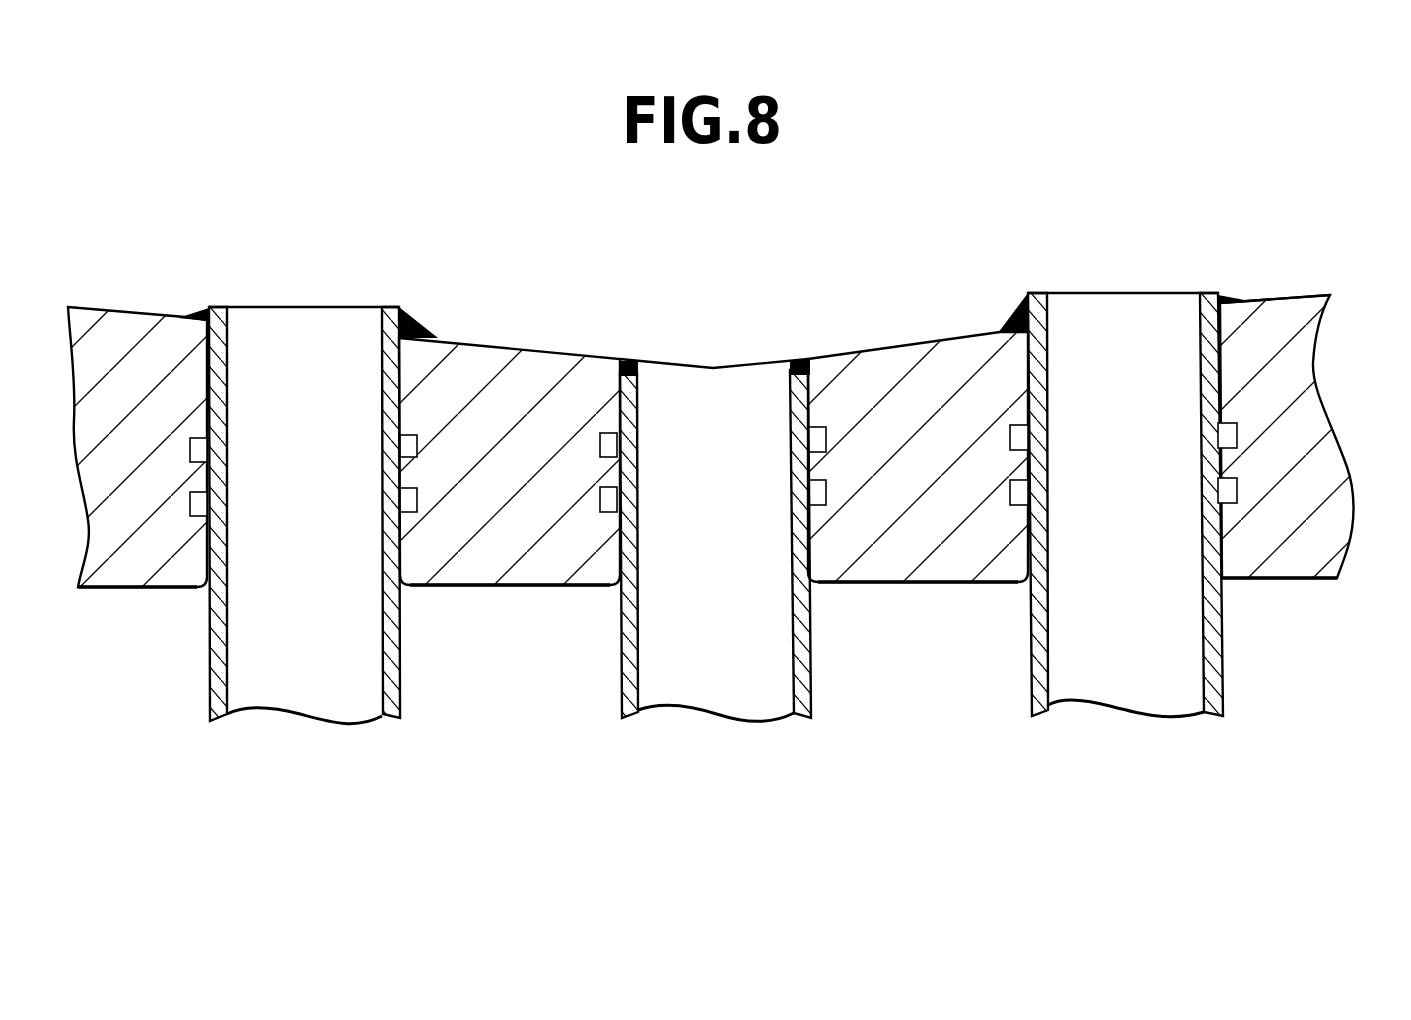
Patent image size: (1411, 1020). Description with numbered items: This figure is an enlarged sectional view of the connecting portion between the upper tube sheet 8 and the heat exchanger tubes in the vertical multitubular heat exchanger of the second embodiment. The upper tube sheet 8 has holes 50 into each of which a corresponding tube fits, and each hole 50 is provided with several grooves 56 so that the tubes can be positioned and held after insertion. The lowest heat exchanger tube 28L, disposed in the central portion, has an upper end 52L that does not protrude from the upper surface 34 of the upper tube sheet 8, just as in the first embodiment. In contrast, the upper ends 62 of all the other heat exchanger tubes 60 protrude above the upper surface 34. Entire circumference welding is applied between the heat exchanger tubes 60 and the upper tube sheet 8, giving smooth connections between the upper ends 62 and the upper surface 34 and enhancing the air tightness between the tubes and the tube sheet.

The upper tube sheet 8 is at (1328, 442).
The upper surface of the upper tube sheet 34 is at (1278, 301).
The hole 50 is at (226, 334).
The upper end of the lowest heat exchanger tube 52L is at (795, 362).
The groove 56 is at (404, 434).
The heat exchanger tube 60 is at (208, 672).
The upper end of the heat exchanger tube 62 is at (388, 307).
The lowest heat exchanger tube 28L is at (812, 675).